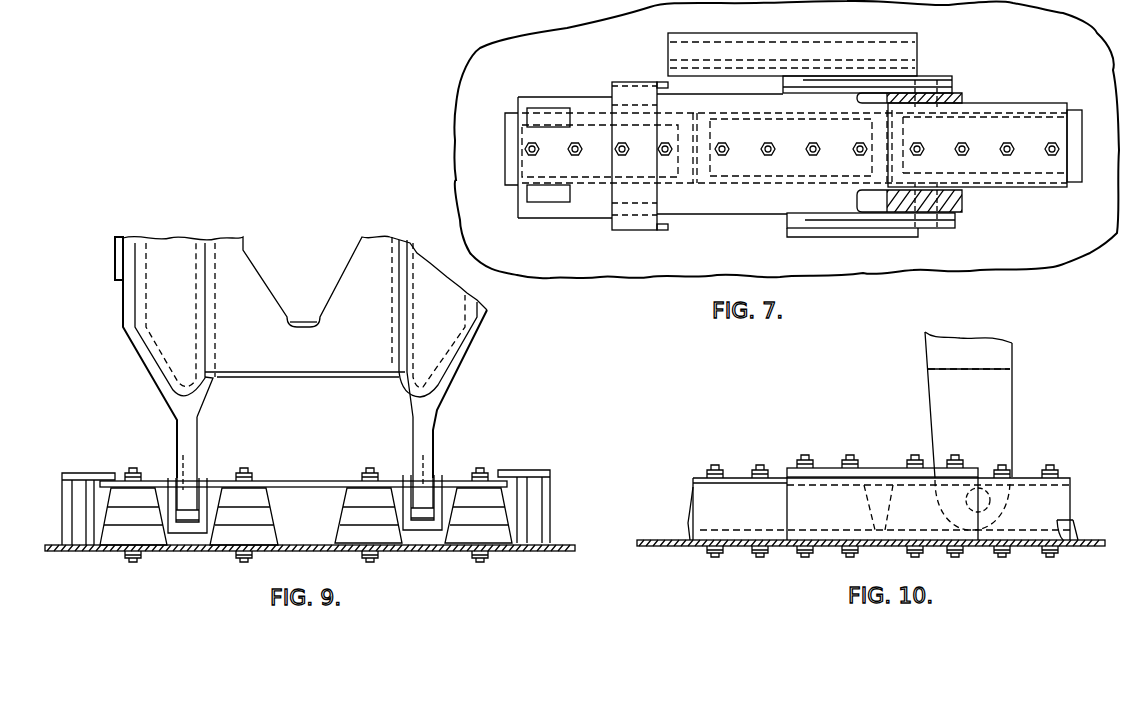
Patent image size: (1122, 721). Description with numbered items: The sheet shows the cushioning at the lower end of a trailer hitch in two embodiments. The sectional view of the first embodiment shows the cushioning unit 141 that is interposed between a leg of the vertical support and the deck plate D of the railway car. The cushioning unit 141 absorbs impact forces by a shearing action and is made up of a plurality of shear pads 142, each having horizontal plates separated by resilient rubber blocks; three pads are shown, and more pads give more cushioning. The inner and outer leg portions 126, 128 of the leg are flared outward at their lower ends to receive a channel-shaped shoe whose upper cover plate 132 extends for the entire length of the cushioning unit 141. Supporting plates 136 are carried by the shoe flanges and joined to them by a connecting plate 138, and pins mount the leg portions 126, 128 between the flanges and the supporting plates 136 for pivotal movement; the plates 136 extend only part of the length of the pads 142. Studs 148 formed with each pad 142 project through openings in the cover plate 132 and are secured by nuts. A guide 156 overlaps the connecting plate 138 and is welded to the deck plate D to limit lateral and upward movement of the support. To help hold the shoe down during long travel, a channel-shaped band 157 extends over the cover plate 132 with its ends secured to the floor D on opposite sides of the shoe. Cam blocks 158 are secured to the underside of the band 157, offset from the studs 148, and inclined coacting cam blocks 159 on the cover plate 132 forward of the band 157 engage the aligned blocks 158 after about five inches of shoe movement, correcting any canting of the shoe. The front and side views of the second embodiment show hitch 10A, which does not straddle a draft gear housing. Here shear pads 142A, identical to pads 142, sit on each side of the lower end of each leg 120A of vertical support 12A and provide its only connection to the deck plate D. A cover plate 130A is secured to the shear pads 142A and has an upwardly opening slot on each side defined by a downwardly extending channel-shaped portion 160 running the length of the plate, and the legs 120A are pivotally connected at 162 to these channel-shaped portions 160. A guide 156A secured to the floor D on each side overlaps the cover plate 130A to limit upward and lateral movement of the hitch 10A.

In FIG. 7, the cushioning unit 141 is at (505, 158).
In FIG. 7, the upper cover plate 132 is at (595, 175).
In FIG. 7, the inclined coacting cam blocks 159 is at (529, 108).
In FIG. 7, the channel-shaped band 157 is at (641, 58).
In FIG. 7, the cam blocks 158 is at (650, 112).
In FIG. 7, the studs 148 is at (727, 146).
In FIG. 7, the shear pads 142 is at (1037, 130).
In FIG. 7, the guide 156 is at (784, 32).
In FIG. 7, the connecting plate 138 is at (857, 75).
In FIG. 7, the supporting plates 136 is at (796, 222).
In FIG. 7, the inner leg portion 126 is at (962, 100).
In FIG. 7, the outer leg portion 128 is at (962, 202).
In FIG. 7, the deck plate D is at (1090, 228).
In FIG. 9, the deck plate D is at (45, 549).
In FIG. 10, the deck plate D is at (970, 547).
In FIG. 9, the hitch 10A is at (112, 258).
In FIG. 9, the vertical support 12A is at (450, 330).
In FIG. 9, the cover plate 130A is at (278, 483).
In FIG. 9, the legs 120A is at (199, 436).
In FIG. 10, the legs 120A is at (1005, 425).
In FIG. 9, the channel-shaped portion 160 is at (182, 530).
In FIG. 9, the pivotal connection 162 is at (183, 456).
In FIG. 9, the guide 156A is at (90, 450).
In FIG. 10, the guide 156A is at (820, 468).
In FIG. 9, the shear pads 142A is at (118, 535).
In FIG. 10, the shear pads 142A is at (705, 520).